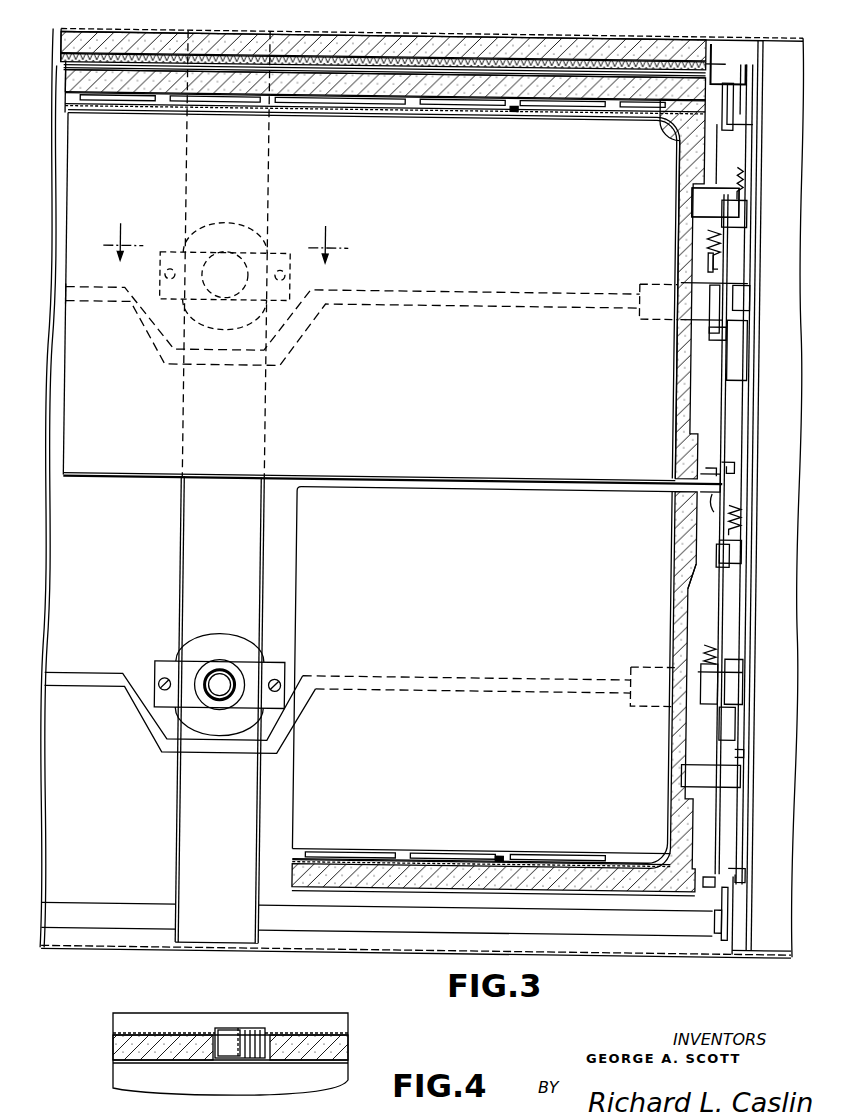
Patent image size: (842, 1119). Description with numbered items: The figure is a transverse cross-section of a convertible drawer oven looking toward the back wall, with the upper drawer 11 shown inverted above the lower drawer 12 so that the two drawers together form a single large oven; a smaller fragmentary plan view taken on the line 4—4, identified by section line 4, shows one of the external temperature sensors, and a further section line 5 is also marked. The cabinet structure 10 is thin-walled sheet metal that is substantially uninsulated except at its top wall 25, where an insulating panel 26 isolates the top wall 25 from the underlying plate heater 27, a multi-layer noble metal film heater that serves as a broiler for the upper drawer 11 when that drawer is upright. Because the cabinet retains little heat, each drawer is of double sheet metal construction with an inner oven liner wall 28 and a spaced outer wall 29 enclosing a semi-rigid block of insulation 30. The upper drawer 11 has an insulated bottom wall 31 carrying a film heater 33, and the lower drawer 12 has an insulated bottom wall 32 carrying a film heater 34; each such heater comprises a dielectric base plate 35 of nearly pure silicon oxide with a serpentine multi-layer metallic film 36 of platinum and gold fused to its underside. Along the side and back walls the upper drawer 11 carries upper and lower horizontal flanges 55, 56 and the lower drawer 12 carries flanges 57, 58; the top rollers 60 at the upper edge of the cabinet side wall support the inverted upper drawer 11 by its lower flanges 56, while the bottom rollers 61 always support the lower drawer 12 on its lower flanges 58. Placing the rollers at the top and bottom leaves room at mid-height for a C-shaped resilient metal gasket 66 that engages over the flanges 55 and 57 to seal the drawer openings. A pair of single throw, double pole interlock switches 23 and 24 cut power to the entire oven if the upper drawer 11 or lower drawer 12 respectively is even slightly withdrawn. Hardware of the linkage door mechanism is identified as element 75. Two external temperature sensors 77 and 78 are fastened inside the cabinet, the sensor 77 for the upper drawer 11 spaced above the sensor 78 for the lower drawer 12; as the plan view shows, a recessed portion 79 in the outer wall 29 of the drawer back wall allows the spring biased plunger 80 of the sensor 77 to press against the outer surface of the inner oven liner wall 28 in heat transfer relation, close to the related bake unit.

In FIG. 3, the section line 4— 4 is at (226, 242).
In FIG. 3, the section line 5— 5 is at (290, 18).
In FIG. 3, the cabinet structure 10 is at (612, 38).
In FIG. 3, the upper drawer 11 is at (428, 384).
In FIG. 3, the lower drawer 12 is at (428, 598).
In FIG. 3, the interlock switch 23 is at (712, 200).
In FIG. 3, the interlock switch 24 is at (705, 775).
In FIG. 3, the top wall 25 is at (513, 38).
In FIG. 3, the insulating panel 26 is at (454, 50).
In FIG. 3, the plate heater 27 is at (390, 62).
In FIG. 3, the inner oven liner wall 28 is at (675, 550).
In FIG. 4, the inner oven liner wall 28 is at (290, 1063).
In FIG. 3, the outer wall 29 is at (698, 565).
In FIG. 4, the outer wall 29 is at (340, 1021).
In FIG. 3, the insulation 30 is at (519, 105).
In FIG. 4, the insulation 30 is at (337, 1048).
In FIG. 3, the insulated bottom wall 31 is at (660, 116).
In FIG. 3, the insulated bottom wall 32 is at (530, 889).
In FIG. 3, the film heater 33 is at (530, 110).
In FIG. 3, the film heater 34 is at (515, 855).
In FIG. 3, the dielectric base plate 35 is at (418, 108).
In FIG. 3, the multi-layer metallic film 36 is at (370, 108).
In FIG. 3, the upper horizontal flange 55 is at (700, 476).
In FIG. 3, the lower horizontal flange 56 is at (712, 78).
In FIG. 3, the upper horizontal flange 57 is at (724, 497).
In FIG. 3, the lower horizontal flange 58 is at (708, 880).
In FIG. 3, the top rollers 60 is at (718, 126).
In FIG. 3, the bottom rollers 61 is at (718, 922).
In FIG. 3, the resilient metal gasket 66 is at (735, 465).
In FIG. 3, the door mechanism hardware 75 is at (745, 223).
In FIG. 3, the external temperature sensor 77 is at (222, 264).
In FIG. 4, the external temperature sensor 77 is at (240, 1027).
In FIG. 3, the external temperature sensor 78 is at (222, 674).
In FIG. 4, the recessed portion 79 is at (265, 1030).
In FIG. 4, the spring biased plunger 80 is at (215, 1022).